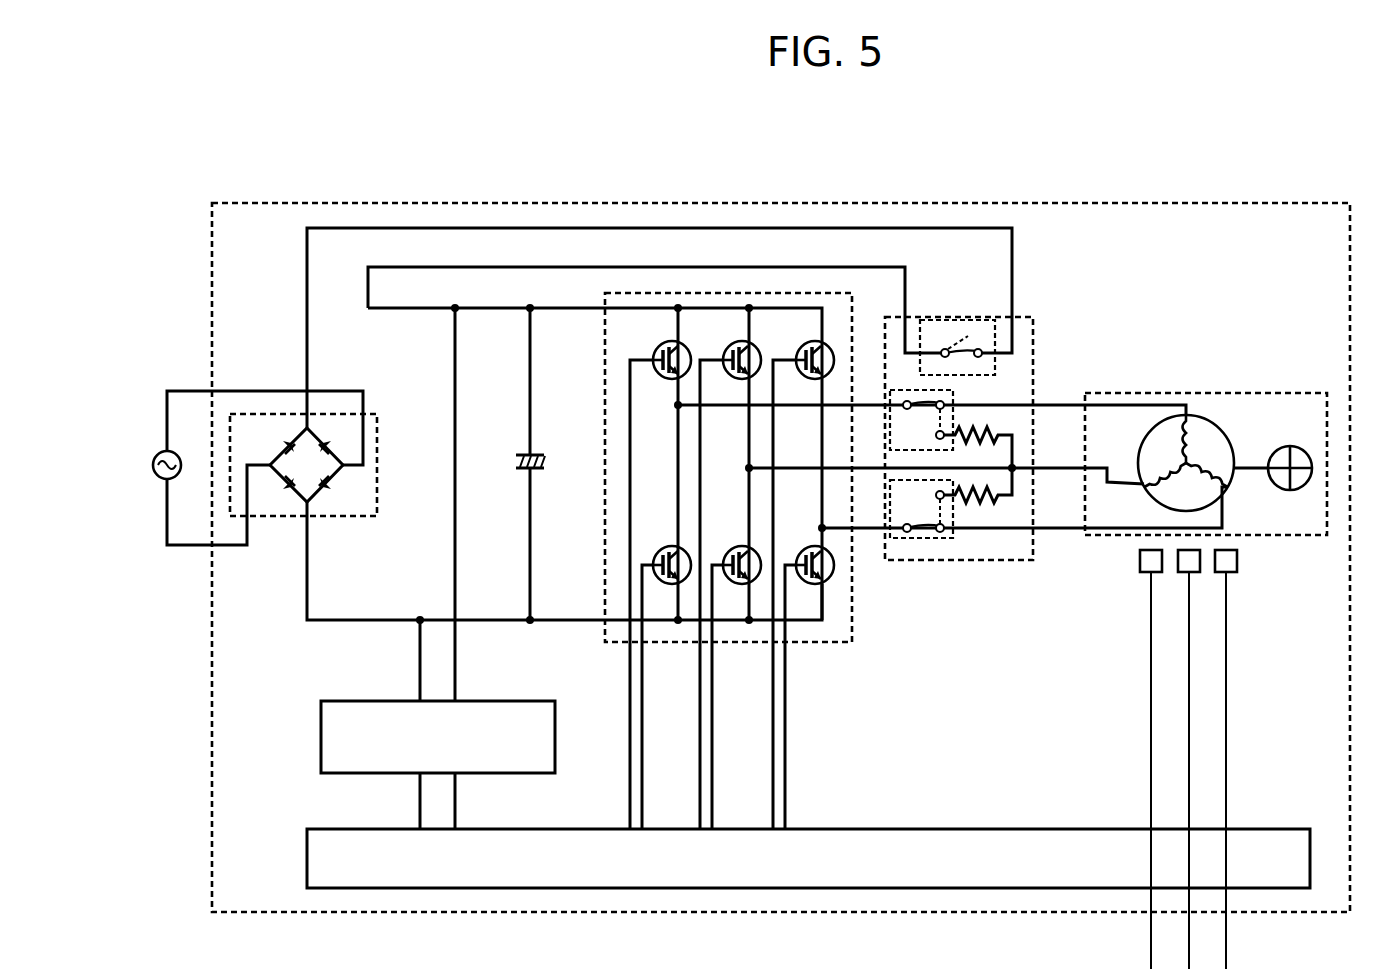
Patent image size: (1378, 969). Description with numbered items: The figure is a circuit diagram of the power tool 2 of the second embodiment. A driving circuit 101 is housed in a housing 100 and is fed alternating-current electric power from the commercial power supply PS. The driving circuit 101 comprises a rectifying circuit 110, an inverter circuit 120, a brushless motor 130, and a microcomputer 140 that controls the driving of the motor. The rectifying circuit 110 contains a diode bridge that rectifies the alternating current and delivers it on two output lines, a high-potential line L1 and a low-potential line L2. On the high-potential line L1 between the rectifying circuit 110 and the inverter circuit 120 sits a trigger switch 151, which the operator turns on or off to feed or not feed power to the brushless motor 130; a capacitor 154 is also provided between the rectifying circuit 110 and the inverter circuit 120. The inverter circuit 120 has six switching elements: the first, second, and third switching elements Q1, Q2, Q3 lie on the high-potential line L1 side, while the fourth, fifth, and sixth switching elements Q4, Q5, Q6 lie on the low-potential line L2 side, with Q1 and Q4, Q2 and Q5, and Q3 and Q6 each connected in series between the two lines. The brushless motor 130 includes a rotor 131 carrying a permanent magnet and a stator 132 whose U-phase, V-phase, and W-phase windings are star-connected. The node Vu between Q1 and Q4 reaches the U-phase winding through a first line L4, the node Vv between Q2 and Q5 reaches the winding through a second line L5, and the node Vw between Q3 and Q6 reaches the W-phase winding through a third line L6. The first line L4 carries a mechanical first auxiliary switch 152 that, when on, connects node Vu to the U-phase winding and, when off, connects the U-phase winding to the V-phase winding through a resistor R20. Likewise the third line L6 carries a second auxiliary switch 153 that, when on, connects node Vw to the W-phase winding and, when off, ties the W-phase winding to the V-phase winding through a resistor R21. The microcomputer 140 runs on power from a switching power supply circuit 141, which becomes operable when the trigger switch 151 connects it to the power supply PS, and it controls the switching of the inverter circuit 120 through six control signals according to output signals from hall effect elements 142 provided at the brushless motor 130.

The power tool 2 is at (862, 172).
The housing 100 is at (781, 526).
The driving circuit 101 is at (667, 203).
The rectifying circuit 110 is at (345, 516).
The inverter circuit 120 is at (739, 561).
The brushless motor 130 is at (1206, 435).
The rotor 131 is at (1297, 490).
The stator 132 is at (1214, 413).
The microcomputer 140 is at (976, 828).
The switching power supply circuit 141 is at (557, 735).
The hall effect elements 142 is at (1160, 575).
The trigger switch 151 is at (1032, 465).
The first auxiliary switch 152 is at (985, 375).
The second auxiliary switch 153 is at (910, 540).
The capacitor 154 is at (546, 464).
The high-potential line L1 is at (492, 228).
The low-potential line L2 is at (347, 622).
The first line L4 is at (930, 417).
The second line L5 is at (944, 479).
The third line L6 is at (1023, 520).
The resistor R20 is at (980, 427).
The resistor R21 is at (977, 505).
The commercial power supply PS is at (175, 480).
The first switching element Q1 is at (658, 351).
The second switching element Q2 is at (729, 351).
The third switching element Q3 is at (802, 351).
The fourth switching element Q4 is at (663, 554).
The fifth switching element Q5 is at (733, 554).
The sixth switching element Q6 is at (807, 554).